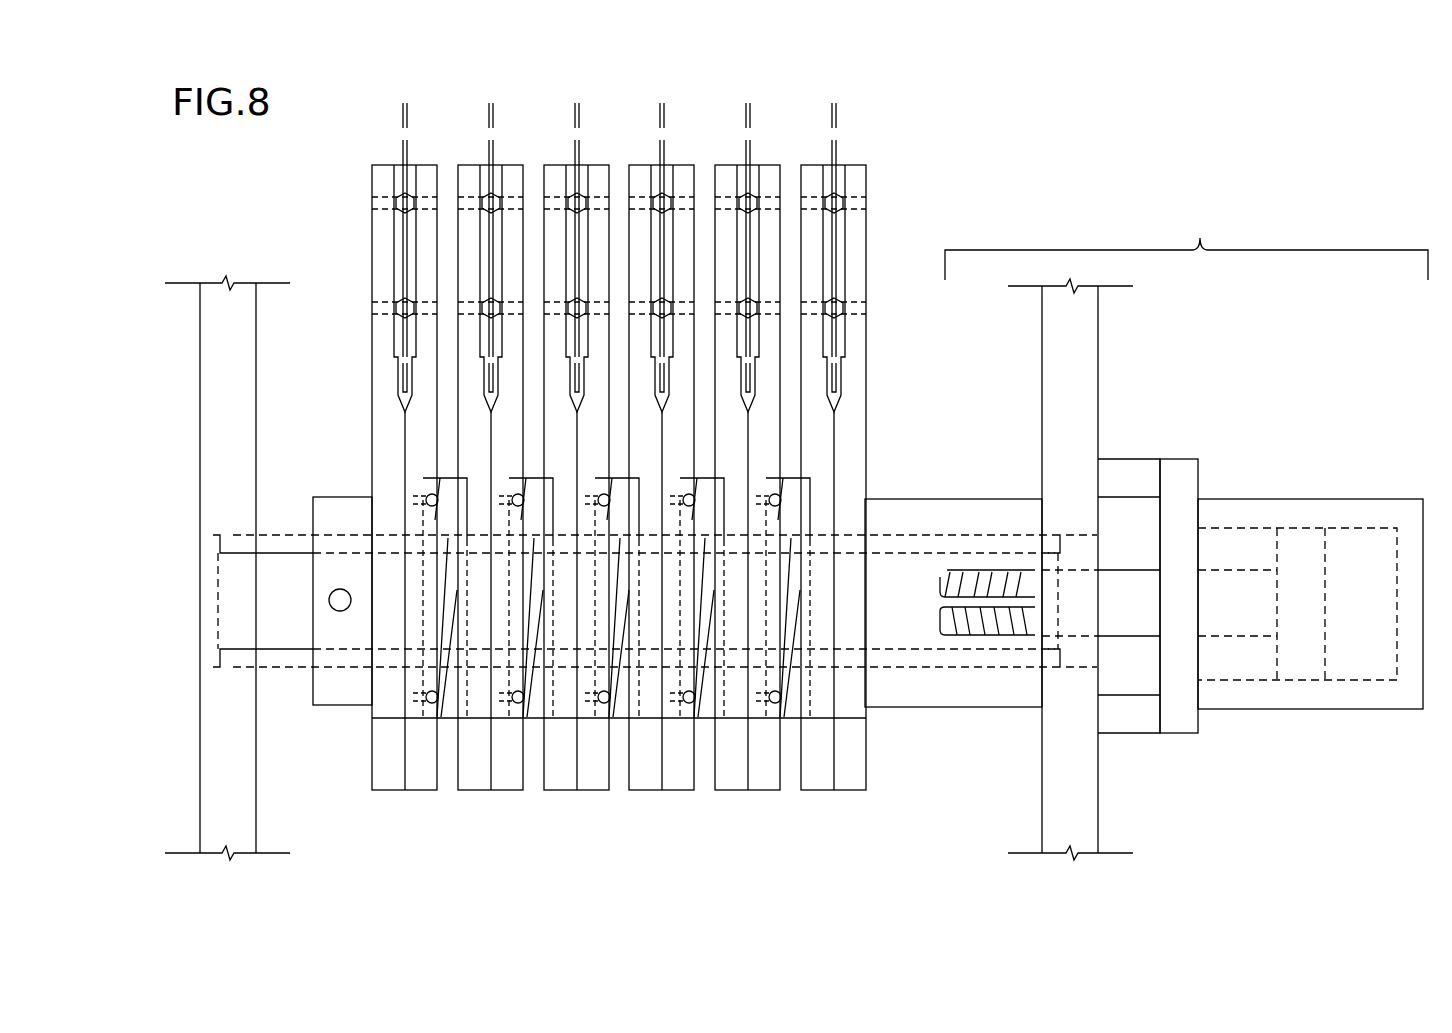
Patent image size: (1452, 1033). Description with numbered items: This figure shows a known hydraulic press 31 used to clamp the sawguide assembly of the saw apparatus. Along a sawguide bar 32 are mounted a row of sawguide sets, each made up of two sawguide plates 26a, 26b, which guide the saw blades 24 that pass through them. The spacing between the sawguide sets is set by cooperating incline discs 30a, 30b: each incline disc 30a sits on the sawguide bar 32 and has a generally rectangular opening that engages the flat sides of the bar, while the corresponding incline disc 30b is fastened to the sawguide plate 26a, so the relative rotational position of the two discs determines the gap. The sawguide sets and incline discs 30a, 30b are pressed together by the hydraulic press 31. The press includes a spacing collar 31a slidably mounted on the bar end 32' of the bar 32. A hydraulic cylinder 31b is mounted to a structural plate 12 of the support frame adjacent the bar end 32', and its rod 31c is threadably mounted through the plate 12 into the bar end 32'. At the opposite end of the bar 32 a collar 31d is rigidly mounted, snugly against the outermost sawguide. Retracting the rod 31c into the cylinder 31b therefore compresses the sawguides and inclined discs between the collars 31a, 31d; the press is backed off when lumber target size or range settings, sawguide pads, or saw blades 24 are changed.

The structural plates 12 is at (250, 383).
The saw blades 24 is at (405, 103).
The sawguide plate 26a is at (768, 350).
The sawguide plate 26b is at (813, 418).
The incline disc 30a is at (805, 508).
The incline disc 30b is at (783, 480).
The hydraulic press 31 is at (1186, 247).
The spacing collar 31a is at (928, 707).
The hydraulic cylinder 31b is at (1310, 499).
The rod 31c is at (1128, 568).
The collar 31d is at (340, 505).
The sawguide bar 32 is at (634, 574).
The bar end 32' is at (1019, 547).